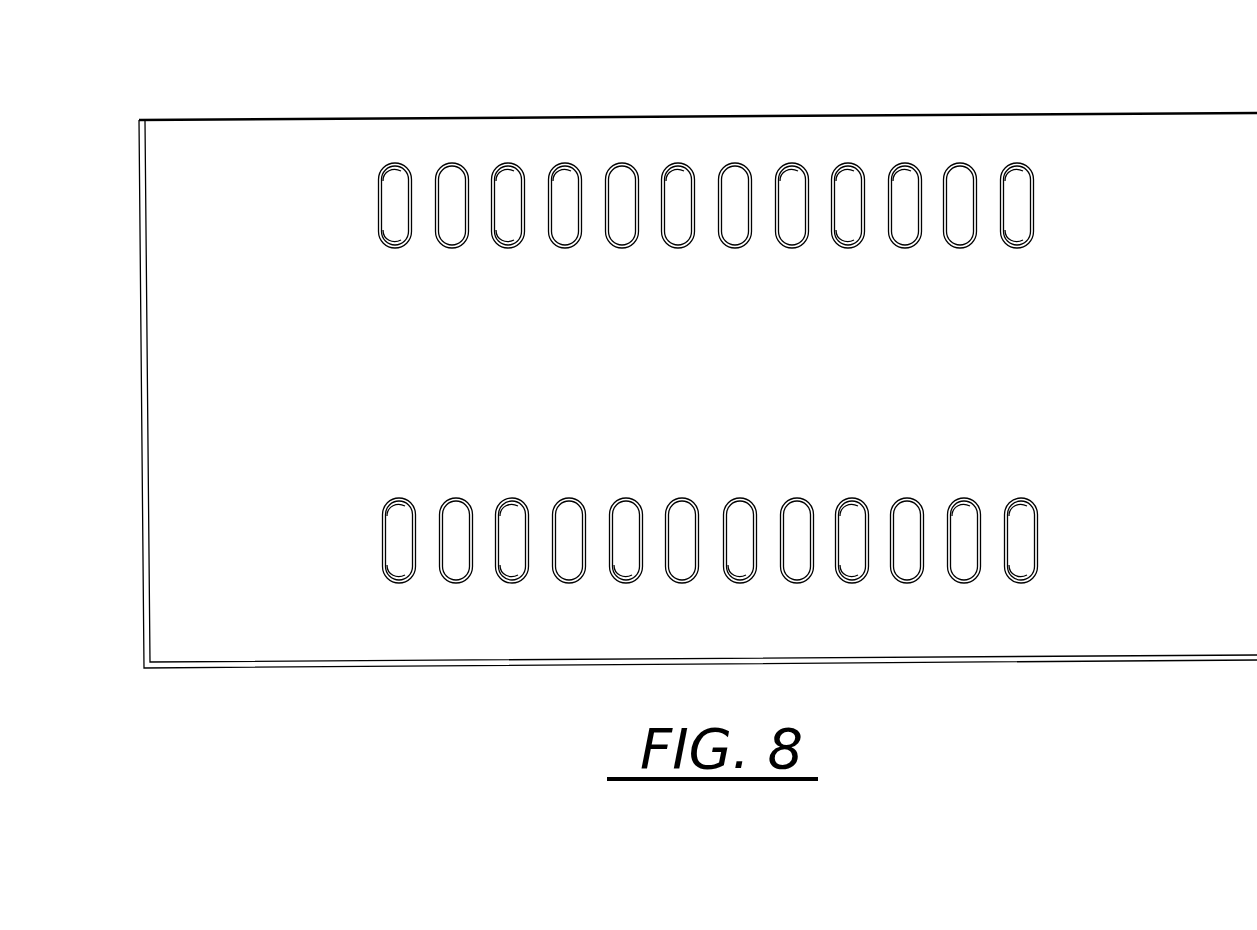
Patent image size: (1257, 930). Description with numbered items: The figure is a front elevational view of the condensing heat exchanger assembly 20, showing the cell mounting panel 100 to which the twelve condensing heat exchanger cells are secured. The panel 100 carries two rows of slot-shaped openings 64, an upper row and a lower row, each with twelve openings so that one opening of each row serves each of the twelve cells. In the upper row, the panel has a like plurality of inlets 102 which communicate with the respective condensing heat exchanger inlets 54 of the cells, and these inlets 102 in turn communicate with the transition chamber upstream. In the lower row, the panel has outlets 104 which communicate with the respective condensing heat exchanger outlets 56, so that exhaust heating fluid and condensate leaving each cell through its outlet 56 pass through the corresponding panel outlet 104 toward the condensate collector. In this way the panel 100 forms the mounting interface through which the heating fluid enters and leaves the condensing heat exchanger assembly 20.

The condensing heat exchanger assembly 20 is at (420, 94).
The condensing heat exchanger inlet 54 is at (498, 172).
The condensing heat exchanger outlet 56 is at (395, 563).
The slot 64 is at (509, 227).
The cell mounting panel 100 is at (243, 150).
The inlet 102 is at (383, 238).
The outlet 104 is at (390, 512).